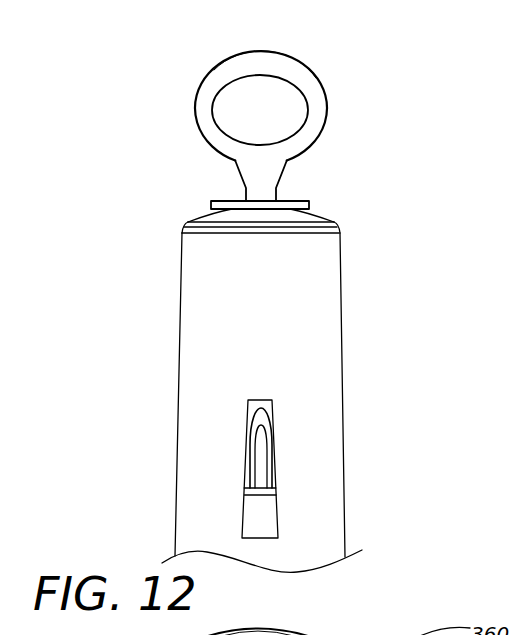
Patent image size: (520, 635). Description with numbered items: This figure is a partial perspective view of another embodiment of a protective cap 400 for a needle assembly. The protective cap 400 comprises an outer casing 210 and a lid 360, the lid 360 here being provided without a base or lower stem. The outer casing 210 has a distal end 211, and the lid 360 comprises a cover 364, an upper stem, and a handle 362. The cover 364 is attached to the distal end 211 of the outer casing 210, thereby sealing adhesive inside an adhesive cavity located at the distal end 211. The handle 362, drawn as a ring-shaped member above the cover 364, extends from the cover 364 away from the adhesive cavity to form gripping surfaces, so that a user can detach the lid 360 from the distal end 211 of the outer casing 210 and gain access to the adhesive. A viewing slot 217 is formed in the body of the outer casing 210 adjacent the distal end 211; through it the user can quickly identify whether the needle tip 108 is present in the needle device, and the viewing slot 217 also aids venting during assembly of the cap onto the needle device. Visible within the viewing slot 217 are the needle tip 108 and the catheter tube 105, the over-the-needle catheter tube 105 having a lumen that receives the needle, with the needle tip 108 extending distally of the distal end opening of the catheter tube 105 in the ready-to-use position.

The catheter tube 105 is at (253, 510).
The needle tip 108 is at (261, 424).
The outer casing 210 is at (257, 392).
The distal end 211 is at (183, 232).
The viewing slot 217 is at (258, 399).
The lid 360 is at (314, 131).
The handle 362 is at (308, 65).
The cover 364 is at (336, 223).
The protective cap 400 is at (289, 305).